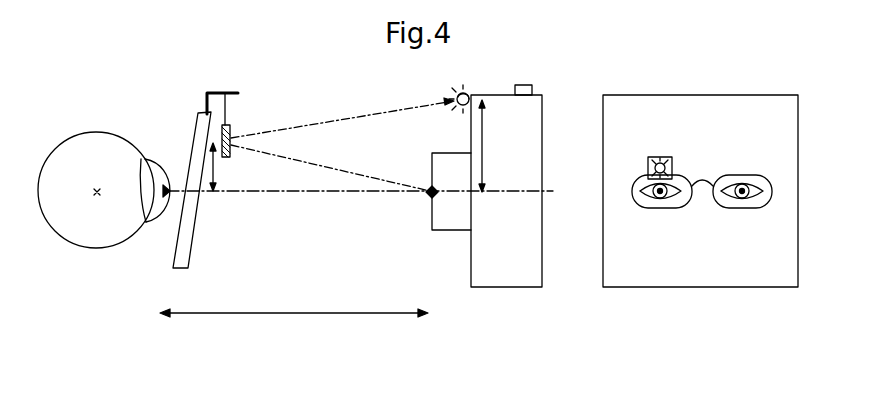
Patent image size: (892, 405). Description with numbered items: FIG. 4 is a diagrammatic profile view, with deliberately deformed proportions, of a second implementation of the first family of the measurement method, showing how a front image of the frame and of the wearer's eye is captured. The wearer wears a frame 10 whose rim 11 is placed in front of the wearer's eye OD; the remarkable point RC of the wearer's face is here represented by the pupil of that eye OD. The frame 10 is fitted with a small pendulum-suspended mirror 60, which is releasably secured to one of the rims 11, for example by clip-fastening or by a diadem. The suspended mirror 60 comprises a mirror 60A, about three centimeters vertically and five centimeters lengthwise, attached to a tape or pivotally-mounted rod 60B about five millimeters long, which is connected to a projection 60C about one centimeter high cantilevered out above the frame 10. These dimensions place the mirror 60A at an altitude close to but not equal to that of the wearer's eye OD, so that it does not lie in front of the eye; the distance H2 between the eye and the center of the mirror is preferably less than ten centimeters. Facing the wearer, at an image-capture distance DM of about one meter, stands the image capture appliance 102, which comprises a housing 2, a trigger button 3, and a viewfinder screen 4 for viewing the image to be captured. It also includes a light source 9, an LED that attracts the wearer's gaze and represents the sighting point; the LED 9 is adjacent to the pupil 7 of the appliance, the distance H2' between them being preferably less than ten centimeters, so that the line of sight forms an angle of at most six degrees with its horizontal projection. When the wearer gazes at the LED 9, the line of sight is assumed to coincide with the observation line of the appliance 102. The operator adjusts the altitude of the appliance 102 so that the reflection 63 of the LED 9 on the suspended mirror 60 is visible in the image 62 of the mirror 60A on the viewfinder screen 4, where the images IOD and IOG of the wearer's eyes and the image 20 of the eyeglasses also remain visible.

The wearer's eye OD is at (96, 249).
The remarkable point of the wearer's face RC is at (167, 185).
The frame 10 is at (155, 215).
The rim 11 is at (197, 117).
The pendulum-suspended mirror 60 is at (317, 111).
The mirror 60A is at (233, 152).
The pivotally-mounted rod 60B is at (240, 93).
The projection 60C is at (208, 90).
The distance between the wearer's eye and the center of the mirror H2 is at (239, 167).
The image-capture distance DM is at (294, 325).
The image capture appliance 102 is at (480, 223).
The housing 2 is at (487, 289).
The trigger button 3 is at (529, 85).
The light source (LED) 9 is at (470, 94).
The pupil of the image capture appliance 7 is at (428, 194).
The distance between the LED and the pupil H2' is at (502, 146).
The viewfinder screen 4 is at (700, 198).
The image of the mirror 62 is at (674, 168).
The reflection of the LED 63 is at (652, 160).
The image of the eyeglasses 20 is at (655, 210).
The image of the wearer's left eye IOG is at (742, 183).
The image of the wearer's right eye IOD is at (696, 193).